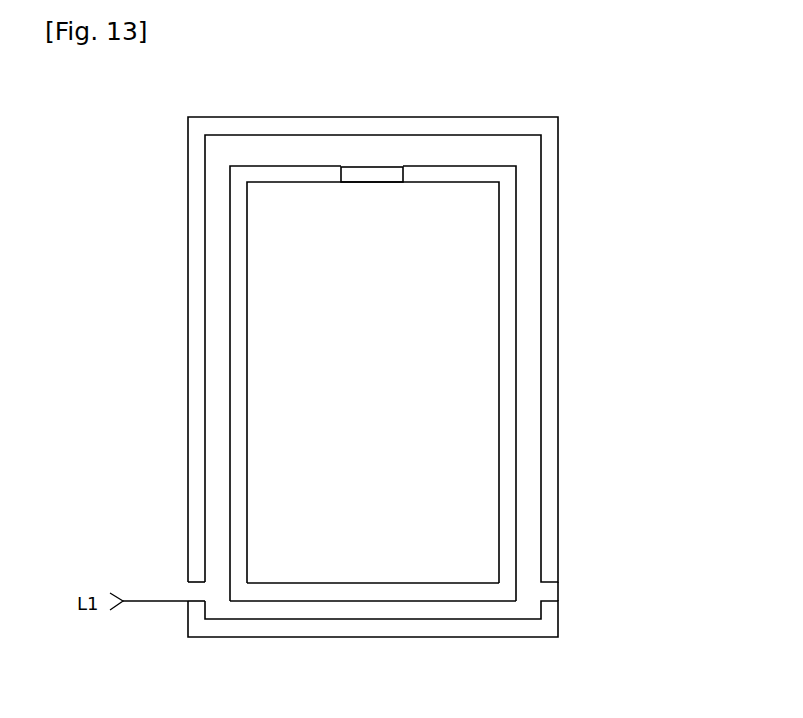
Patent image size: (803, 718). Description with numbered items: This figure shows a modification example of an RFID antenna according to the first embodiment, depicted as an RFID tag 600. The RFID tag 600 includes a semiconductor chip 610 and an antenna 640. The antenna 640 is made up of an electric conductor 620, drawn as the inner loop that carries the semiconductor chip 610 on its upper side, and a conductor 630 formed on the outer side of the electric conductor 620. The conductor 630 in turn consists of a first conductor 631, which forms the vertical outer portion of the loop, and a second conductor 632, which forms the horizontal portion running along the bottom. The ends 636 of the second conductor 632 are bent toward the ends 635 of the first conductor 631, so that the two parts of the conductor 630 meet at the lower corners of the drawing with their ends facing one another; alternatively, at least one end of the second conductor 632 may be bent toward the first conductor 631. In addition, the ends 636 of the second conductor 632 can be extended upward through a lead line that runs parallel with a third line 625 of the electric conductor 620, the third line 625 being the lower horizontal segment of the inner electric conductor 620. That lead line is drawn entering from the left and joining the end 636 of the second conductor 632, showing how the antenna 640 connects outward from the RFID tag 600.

The RFID tag 600 is at (130, 92).
The semiconductor chip 610 is at (367, 170).
The electric conductor 620 is at (513, 503).
The third line 625 is at (365, 594).
The conductor 630 is at (633, 560).
The first conductor 631 is at (550, 558).
The second conductor 632 is at (553, 615).
The ends of first conductor 635 is at (197, 581).
The ends of second conductor 636 is at (198, 601).
The antenna 640 is at (680, 517).